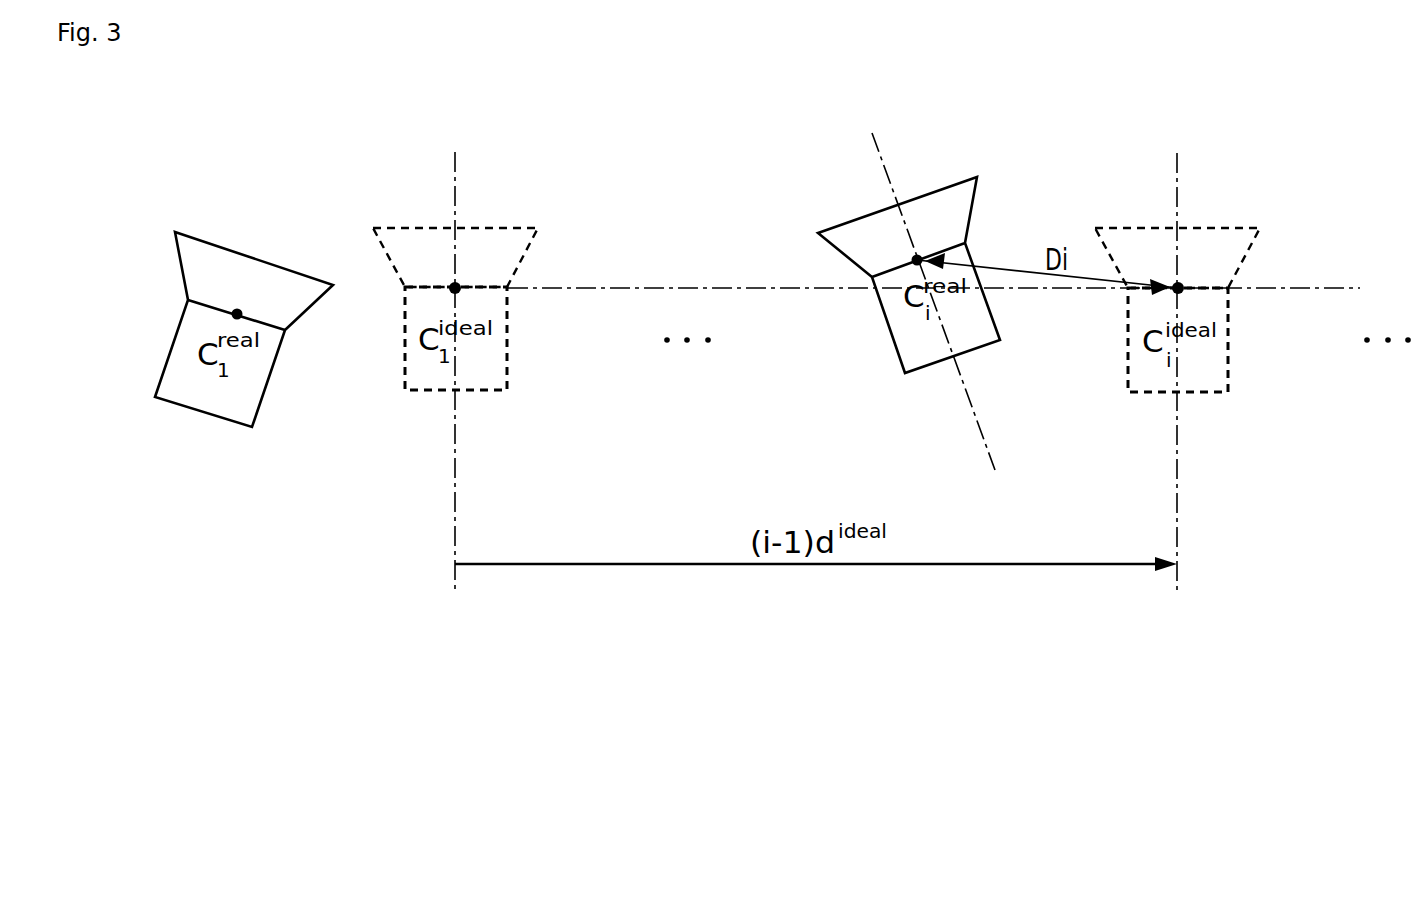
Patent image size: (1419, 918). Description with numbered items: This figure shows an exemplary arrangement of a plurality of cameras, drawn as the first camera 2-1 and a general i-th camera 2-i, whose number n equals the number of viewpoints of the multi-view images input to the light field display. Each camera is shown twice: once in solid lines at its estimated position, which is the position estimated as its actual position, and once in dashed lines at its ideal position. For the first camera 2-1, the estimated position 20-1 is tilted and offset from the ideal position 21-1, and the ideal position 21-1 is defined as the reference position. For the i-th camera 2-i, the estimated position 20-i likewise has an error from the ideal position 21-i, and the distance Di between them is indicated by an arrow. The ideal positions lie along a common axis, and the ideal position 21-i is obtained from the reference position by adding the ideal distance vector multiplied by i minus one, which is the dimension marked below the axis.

The camera 2-1 is at (215, 242).
The estimated position 20-1 is at (237, 314).
The ideal position 21-1 is at (458, 286).
The camera 2-i is at (960, 180).
The estimated position 20-i is at (918, 256).
The ideal position 21-i is at (1182, 286).